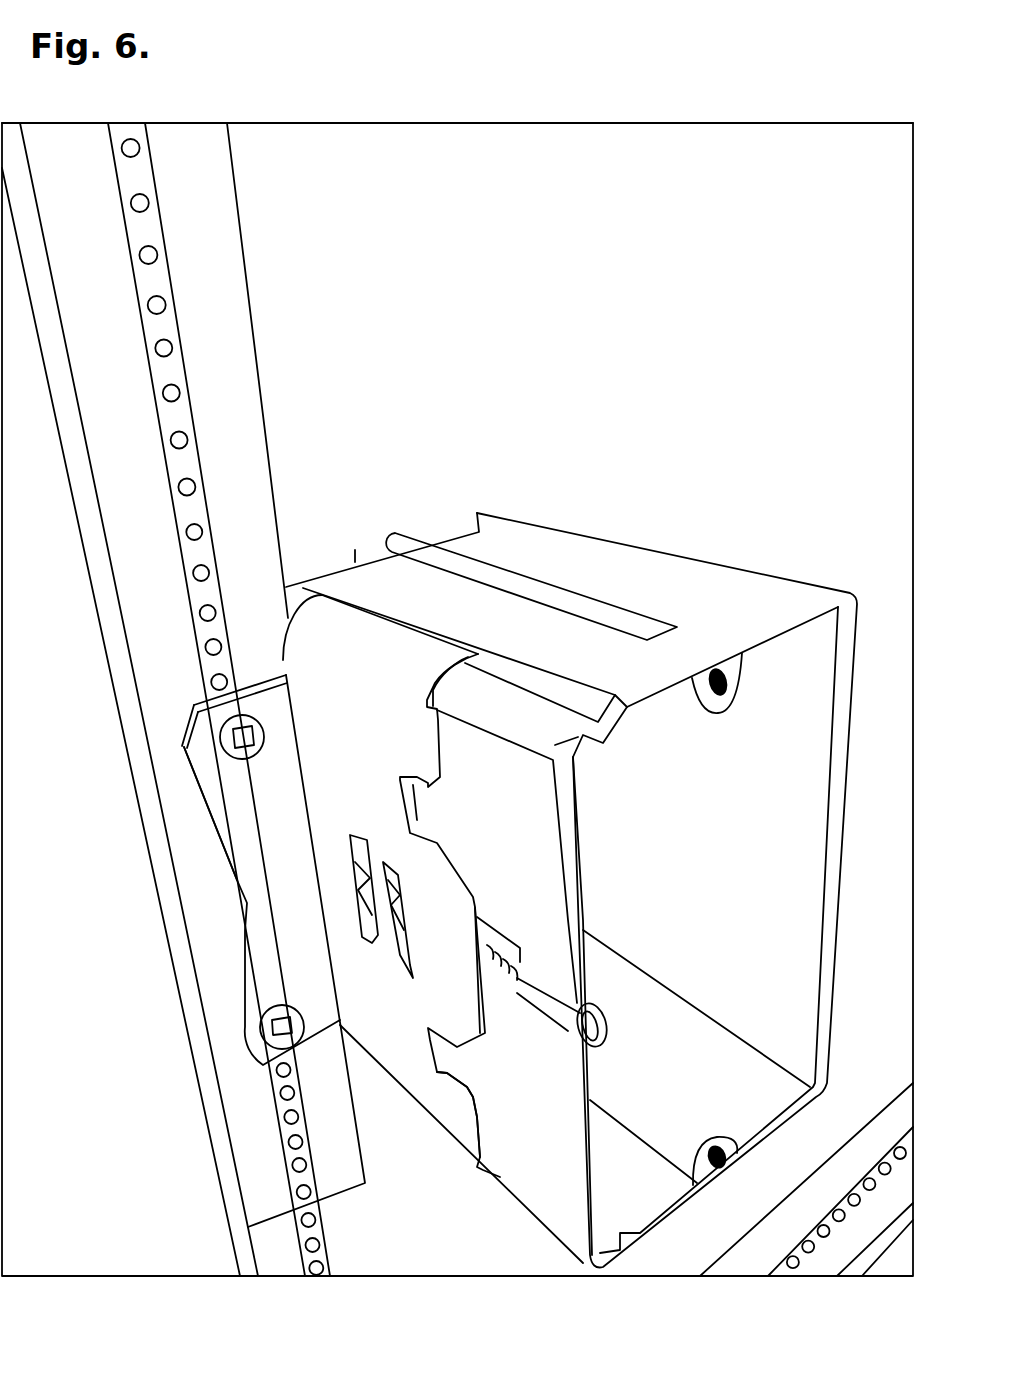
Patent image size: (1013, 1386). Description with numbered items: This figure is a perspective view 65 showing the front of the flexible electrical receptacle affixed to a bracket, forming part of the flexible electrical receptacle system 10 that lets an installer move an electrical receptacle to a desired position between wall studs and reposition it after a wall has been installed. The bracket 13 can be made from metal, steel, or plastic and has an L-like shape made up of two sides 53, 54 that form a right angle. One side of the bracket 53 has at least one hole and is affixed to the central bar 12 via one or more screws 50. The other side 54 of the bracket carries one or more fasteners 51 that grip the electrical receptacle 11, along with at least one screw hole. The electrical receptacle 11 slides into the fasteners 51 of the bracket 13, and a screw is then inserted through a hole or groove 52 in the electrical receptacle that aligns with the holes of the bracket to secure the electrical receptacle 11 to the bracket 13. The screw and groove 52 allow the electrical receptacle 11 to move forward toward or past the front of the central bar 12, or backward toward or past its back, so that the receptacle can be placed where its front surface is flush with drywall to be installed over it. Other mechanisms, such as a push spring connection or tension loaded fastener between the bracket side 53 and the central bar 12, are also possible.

The flexible electrical receptacle system 10 is at (585, 95).
The electrical receptacle 11 is at (590, 528).
The central bar 12 is at (107, 661).
The bracket 13 is at (311, 969).
The screw 50 is at (222, 746).
The fastener 51 is at (391, 820).
The hole or groove 52 is at (577, 1052).
The side of the bracket 53 is at (215, 836).
The other side of the bracket 54 is at (430, 1127).
The perspective view 65 is at (131, 90).